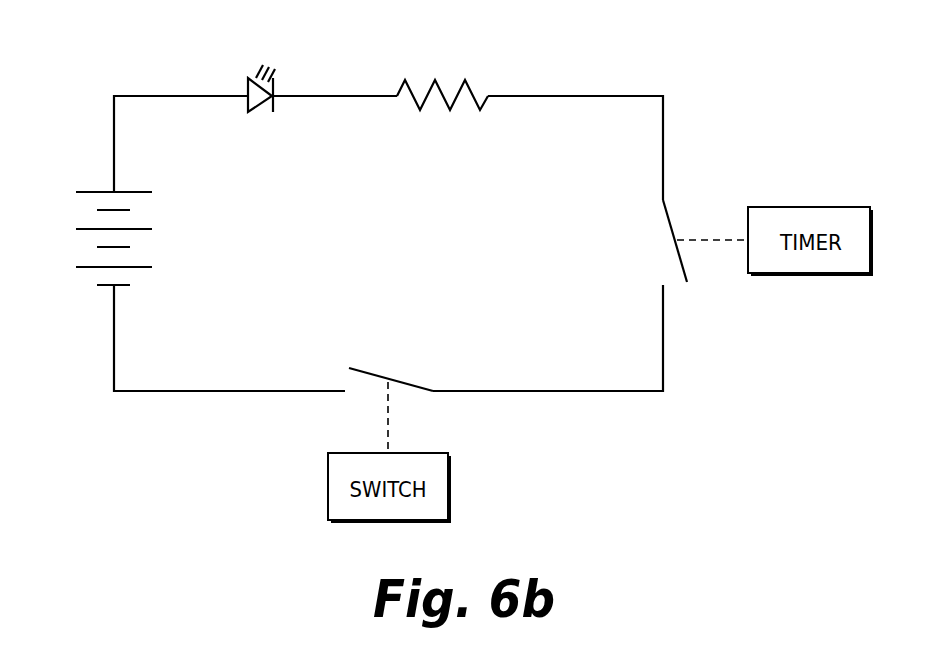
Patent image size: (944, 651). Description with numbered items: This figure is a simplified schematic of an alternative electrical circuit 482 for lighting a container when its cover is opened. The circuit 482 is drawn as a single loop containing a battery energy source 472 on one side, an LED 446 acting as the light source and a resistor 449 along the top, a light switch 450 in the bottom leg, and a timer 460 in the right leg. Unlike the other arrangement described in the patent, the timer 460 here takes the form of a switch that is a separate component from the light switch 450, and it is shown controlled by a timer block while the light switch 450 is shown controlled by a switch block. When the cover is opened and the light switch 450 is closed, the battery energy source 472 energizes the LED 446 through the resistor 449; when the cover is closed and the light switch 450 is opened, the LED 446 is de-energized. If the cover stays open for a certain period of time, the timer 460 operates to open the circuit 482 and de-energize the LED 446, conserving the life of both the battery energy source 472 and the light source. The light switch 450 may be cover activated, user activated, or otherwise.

The LED 446 is at (247, 92).
The resistor 449 is at (445, 92).
The electrical circuit 482 is at (577, 96).
The timer 460 is at (689, 208).
The switch 450 is at (455, 416).
The battery energy source 472 is at (88, 268).